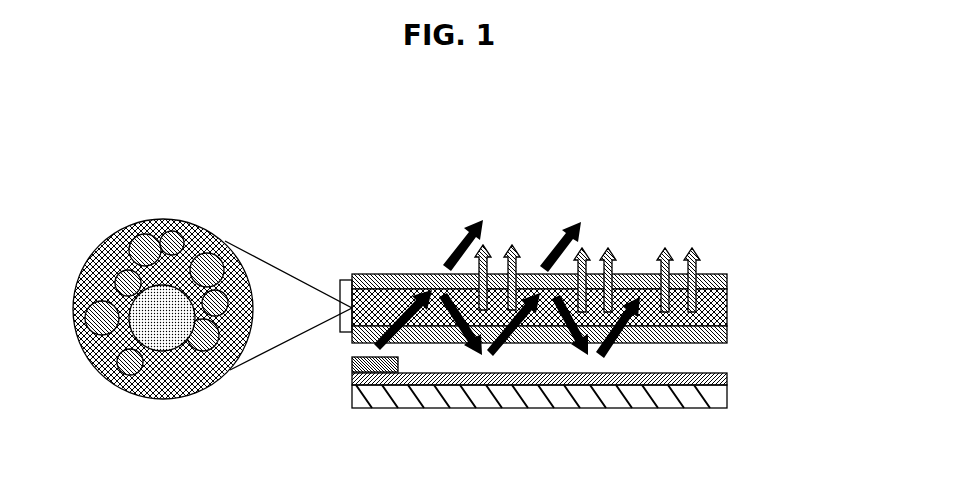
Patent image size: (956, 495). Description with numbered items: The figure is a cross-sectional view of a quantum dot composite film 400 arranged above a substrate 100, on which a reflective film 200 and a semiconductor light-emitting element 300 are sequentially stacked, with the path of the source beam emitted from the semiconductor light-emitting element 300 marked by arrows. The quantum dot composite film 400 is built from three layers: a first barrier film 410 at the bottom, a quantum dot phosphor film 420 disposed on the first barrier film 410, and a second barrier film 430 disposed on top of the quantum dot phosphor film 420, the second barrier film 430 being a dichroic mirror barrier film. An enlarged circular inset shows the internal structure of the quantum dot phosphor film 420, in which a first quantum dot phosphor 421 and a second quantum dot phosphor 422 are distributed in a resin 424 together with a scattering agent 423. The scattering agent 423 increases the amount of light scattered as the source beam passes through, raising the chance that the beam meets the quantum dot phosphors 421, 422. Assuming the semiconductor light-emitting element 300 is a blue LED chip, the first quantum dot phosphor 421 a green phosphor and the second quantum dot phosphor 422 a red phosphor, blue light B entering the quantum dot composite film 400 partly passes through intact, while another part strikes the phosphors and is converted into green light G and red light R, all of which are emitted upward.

The substrate 100 is at (729, 405).
The reflective film 200 is at (729, 383).
The semiconductor light-emitting element 300 is at (351, 363).
The quantum dot composite film 400 is at (582, 310).
The first barrier film 410 is at (729, 338).
The quantum dot phosphor film 420 is at (729, 312).
The second barrier film 430 is at (729, 287).
The first quantum dot phosphor 421 is at (137, 233).
The second quantum dot phosphor 422 is at (187, 230).
The scattering agent 423 is at (155, 350).
The resin 424 is at (207, 393).
The blue light B is at (478, 230).
The green light G is at (486, 246).
The red light R is at (514, 246).